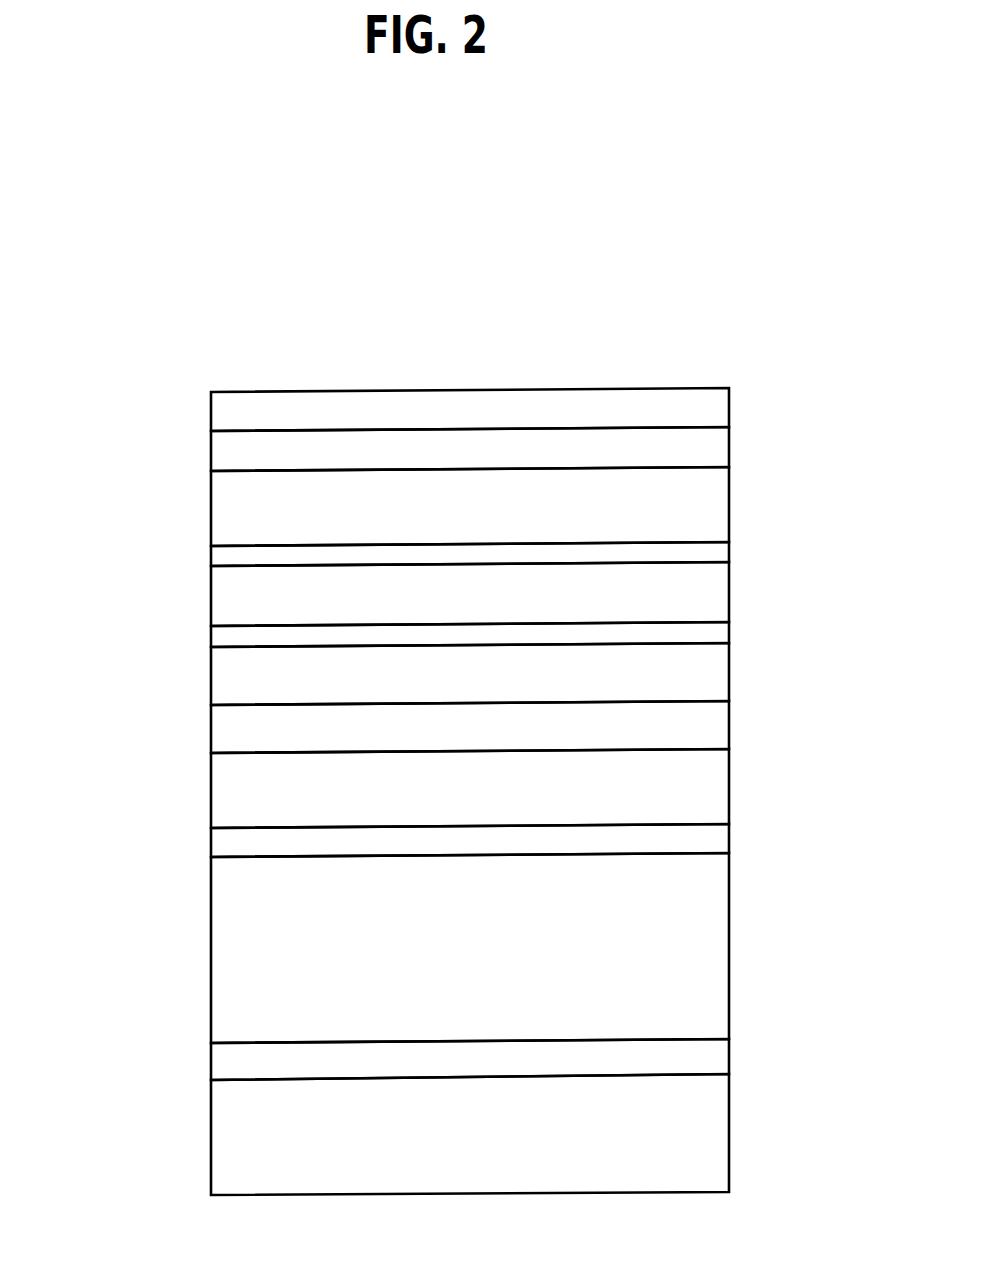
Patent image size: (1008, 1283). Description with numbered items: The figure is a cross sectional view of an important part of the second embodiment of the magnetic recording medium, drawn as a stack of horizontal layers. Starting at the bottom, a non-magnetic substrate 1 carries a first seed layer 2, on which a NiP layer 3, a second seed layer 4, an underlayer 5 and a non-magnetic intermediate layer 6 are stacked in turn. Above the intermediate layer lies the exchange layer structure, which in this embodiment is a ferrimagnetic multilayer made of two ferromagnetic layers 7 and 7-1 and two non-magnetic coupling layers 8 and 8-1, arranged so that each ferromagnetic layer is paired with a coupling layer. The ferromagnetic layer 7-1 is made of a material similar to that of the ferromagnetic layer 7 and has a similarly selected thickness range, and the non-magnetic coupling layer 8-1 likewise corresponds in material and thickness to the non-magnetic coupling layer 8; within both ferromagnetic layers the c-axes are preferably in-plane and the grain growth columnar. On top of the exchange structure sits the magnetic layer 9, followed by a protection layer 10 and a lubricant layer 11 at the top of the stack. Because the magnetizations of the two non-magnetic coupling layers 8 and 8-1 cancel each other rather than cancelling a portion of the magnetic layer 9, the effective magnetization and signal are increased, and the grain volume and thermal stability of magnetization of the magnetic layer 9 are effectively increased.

The non-magnetic substrate 1 is at (718, 1138).
The first seed layer 2 is at (742, 1059).
The NiP layer 3 is at (742, 948).
The second seed layer 4 is at (742, 839).
The underlayer 5 is at (742, 788).
The non-magnetic intermediate layer 6 is at (742, 726).
The ferromagnetic layer 7 is at (198, 599).
The ferromagnetic layer 7-1 is at (198, 676).
The non-magnetic coupling layer 8 is at (198, 561).
The non-magnetic coupling layer 8-1 is at (198, 638).
The magnetic layer 9 is at (742, 507).
The protection layer 10 is at (742, 449).
The lubricant layer 11 is at (742, 413).